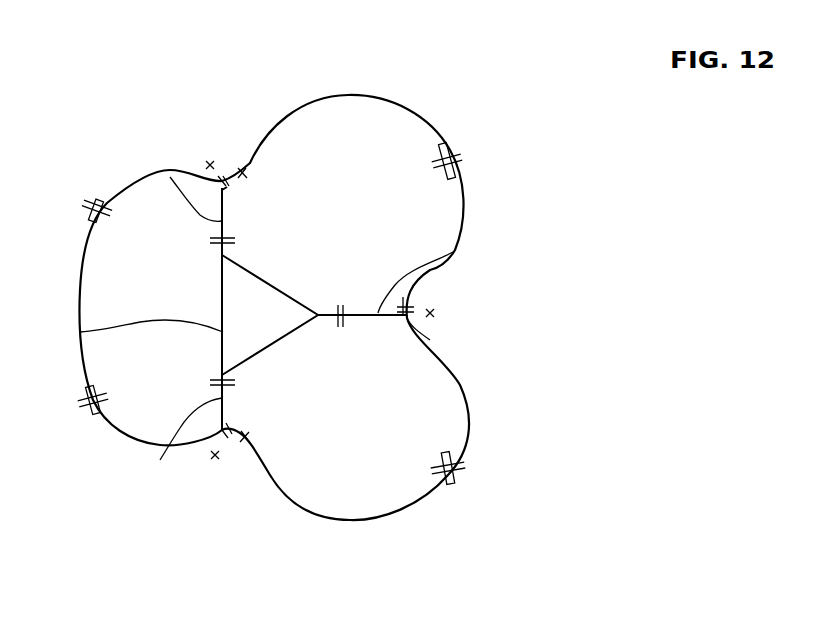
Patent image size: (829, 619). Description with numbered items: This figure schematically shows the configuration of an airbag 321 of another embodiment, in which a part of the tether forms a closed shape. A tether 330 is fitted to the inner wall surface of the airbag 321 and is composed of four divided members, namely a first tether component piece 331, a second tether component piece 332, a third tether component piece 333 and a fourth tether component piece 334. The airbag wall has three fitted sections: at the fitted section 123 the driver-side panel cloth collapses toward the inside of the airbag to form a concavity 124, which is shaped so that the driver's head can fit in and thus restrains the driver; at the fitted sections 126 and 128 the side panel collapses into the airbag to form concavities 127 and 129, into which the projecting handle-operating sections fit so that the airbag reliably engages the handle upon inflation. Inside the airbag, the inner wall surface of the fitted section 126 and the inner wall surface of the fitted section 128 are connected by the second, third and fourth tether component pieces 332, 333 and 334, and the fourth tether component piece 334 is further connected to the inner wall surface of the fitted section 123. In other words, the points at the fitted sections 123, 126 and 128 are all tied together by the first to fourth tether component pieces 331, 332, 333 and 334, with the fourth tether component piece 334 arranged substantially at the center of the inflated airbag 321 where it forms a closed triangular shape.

The airbag 321 is at (356, 92).
The tether 330 is at (293, 275).
The first tether component piece 331 is at (453, 252).
The second tether component piece 332 is at (170, 177).
The third tether component piece 333 is at (160, 460).
The fourth tether component piece 334 is at (80, 332).
The fitted section 123 is at (413, 327).
The concavity 124 is at (437, 314).
The fitted section 126 is at (200, 178).
The concavity 127 is at (213, 158).
The fitted section 128 is at (200, 443).
The concavity 129 is at (216, 462).